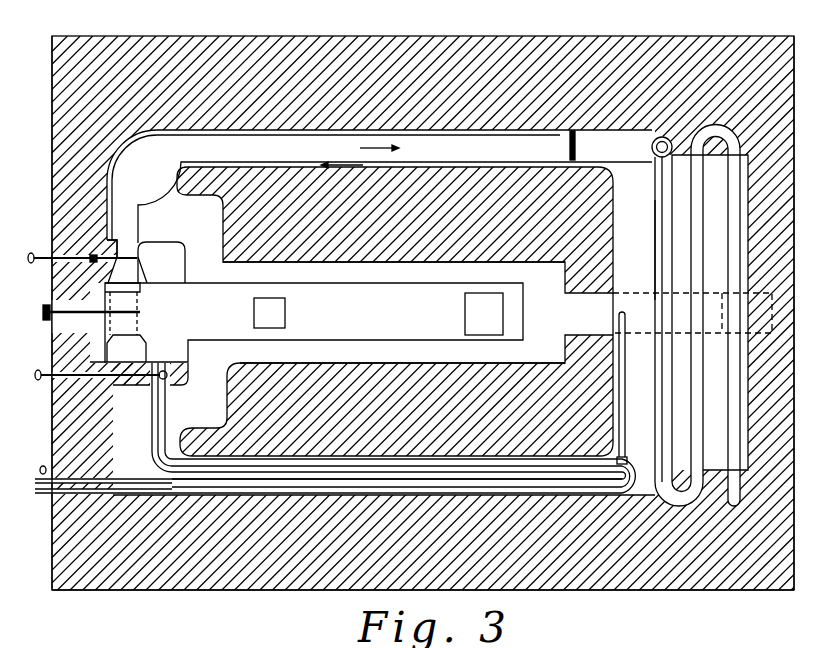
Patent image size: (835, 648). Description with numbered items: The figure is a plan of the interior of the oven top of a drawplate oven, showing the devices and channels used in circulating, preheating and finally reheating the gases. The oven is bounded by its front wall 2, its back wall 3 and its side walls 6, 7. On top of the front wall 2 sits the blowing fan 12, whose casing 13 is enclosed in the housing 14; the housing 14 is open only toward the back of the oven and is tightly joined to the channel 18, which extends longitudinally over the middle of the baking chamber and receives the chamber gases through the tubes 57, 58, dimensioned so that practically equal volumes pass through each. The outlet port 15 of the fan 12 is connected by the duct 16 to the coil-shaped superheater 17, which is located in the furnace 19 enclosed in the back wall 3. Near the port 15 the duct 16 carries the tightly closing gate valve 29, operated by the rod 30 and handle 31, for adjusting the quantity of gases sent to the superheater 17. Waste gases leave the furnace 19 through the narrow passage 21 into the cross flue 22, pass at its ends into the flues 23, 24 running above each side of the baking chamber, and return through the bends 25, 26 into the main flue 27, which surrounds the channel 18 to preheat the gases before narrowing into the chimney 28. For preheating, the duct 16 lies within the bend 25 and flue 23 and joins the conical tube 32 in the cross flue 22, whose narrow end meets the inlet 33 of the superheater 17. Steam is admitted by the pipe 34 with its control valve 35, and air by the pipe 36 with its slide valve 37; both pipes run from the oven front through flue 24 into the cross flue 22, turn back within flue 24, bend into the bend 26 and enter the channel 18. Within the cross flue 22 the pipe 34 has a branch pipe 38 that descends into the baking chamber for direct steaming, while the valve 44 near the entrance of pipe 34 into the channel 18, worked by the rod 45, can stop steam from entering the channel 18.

The front wall 2 is at (52, 106).
The back wall 3 is at (790, 118).
The side wall 6 is at (222, 38).
The side wall 7 is at (318, 590).
The blowing fan 12 is at (118, 330).
The casing 13 is at (140, 353).
The housing 14 is at (97, 292).
The outlet port 15 is at (132, 275).
The duct 16 is at (369, 153).
The coil-shaped superheater 17 is at (735, 205).
The channel 18 is at (306, 322).
The furnace 19 is at (710, 318).
The narrow passage 21 is at (655, 205).
The flue 22 is at (655, 598).
The flue 23 is at (390, 128).
The flue 24 is at (545, 497).
The bend 25 is at (423, 313).
The bend 26 is at (423, 313).
The main flue 27 is at (408, 312).
The chimney 28 is at (722, 337).
The gate valve 29 is at (122, 253).
The rod 30 is at (52, 238).
The handle 31 is at (31, 253).
The conical tube 32 is at (597, 143).
The inlet 33 is at (658, 137).
The pipe 34 is at (165, 408).
The control valve 35 is at (43, 466).
The pipe 36 is at (152, 432).
The slide valve 37 is at (47, 497).
The branch pipe 38 is at (631, 384).
The valve 44 is at (167, 377).
The rod 45 is at (42, 380).
The tube 57 is at (269, 313).
The tube 58 is at (484, 314).